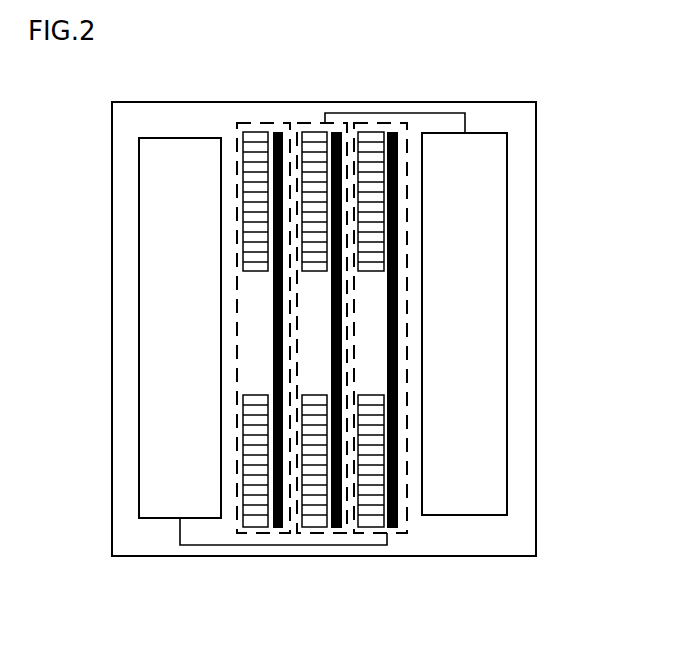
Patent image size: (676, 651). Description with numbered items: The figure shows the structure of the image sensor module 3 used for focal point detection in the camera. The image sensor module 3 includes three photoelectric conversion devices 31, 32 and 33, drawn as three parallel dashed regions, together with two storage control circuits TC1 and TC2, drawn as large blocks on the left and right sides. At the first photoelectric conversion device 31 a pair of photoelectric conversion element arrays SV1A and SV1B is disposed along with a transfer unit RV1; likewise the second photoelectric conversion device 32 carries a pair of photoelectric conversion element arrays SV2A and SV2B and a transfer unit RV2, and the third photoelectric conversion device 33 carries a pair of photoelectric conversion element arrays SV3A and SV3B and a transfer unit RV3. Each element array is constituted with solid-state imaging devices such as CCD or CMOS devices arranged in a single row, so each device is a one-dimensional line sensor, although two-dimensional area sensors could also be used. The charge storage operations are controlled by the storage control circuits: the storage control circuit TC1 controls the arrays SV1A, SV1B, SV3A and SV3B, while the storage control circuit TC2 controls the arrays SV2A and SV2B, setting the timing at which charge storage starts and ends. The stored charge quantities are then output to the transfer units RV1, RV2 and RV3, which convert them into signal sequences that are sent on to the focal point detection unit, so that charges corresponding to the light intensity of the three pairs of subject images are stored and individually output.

The image sensor module 3 is at (566, 116).
The photoelectric conversion device 31 is at (233, 122).
The photoelectric conversion device 32 is at (298, 122).
The photoelectric conversion device 33 is at (362, 122).
The photoelectric conversion element array SV1A is at (260, 126).
The photoelectric conversion element array SV2A is at (320, 126).
The photoelectric conversion element array SV3A is at (380, 126).
The photoelectric conversion element array SV1B is at (256, 528).
The photoelectric conversion element array SV2B is at (312, 528).
The photoelectric conversion element array SV3B is at (380, 528).
The transfer unit RV1 is at (278, 530).
The transfer unit RV2 is at (337, 530).
The transfer unit RV3 is at (394, 530).
The storage control circuit TC1 is at (139, 313).
The storage control circuit TC2 is at (507, 311).